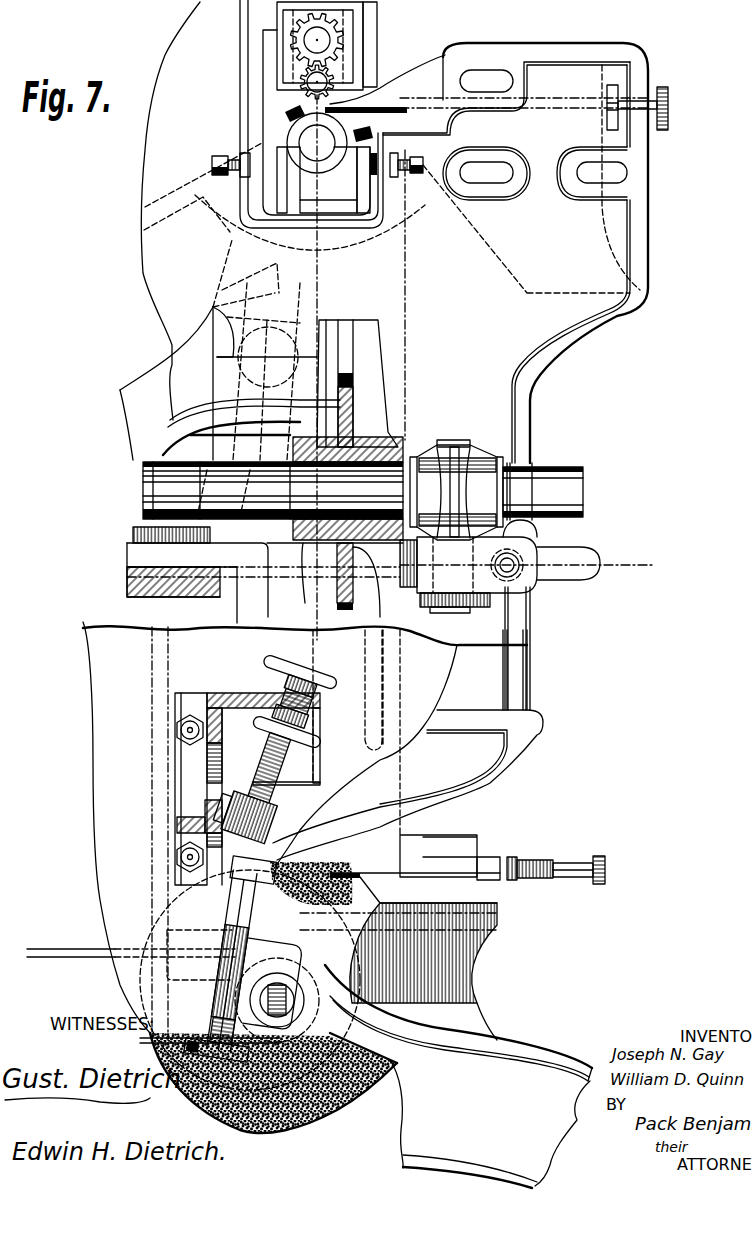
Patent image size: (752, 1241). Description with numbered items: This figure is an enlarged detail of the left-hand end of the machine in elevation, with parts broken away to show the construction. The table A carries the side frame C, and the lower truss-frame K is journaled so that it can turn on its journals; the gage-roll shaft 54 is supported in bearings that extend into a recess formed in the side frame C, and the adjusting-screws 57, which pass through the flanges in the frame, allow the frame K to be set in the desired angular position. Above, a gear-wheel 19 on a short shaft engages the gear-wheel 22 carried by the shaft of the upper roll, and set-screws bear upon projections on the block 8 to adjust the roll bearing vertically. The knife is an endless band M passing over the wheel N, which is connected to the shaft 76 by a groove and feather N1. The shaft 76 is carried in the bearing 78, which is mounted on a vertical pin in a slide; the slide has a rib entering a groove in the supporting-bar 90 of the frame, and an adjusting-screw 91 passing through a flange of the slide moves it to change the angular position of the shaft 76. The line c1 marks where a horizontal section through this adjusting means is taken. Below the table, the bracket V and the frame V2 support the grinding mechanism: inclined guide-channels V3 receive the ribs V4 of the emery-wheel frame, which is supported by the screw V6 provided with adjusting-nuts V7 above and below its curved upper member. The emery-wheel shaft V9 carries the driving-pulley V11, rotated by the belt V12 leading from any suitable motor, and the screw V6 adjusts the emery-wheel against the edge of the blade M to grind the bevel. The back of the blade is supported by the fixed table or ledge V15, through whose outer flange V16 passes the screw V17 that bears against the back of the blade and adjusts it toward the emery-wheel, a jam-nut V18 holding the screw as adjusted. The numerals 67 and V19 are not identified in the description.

The block 8 is at (372, 33).
The gear-wheel 19 is at (293, 33).
The gear-wheel 22 is at (293, 76).
The shaft 54 is at (342, 114).
The adjusting-screws 57 is at (216, 156).
The clamping screw 67 is at (650, 107).
The shaft 76 is at (583, 473).
The bearing 78 is at (456, 490).
The supporting-bar 90 is at (534, 566).
The adjusting-screw 91 is at (508, 577).
The lower truss-frame K is at (272, 231).
The side frame C is at (419, 451).
The wheel N is at (357, 383).
The groove and feather N1 is at (273, 488).
The section line c1 is at (265, 540).
The table A is at (582, 577).
The bracket V is at (305, 831).
The frame V2 is at (247, 776).
The inclined guide-channels V3 is at (292, 815).
The ribs V4 is at (210, 1000).
The screw V6 is at (290, 1003).
The adjusting-nuts V7 is at (287, 667).
The shaft V9 is at (455, 1010).
The driving-pulley V11 is at (273, 997).
The belt V12 is at (131, 961).
The fixed table or ledge V15 is at (500, 897).
The outer flange V16 is at (280, 757).
The screw V17 is at (553, 864).
The jam-nut V18 is at (513, 860).
The nut V19 is at (250, 796).
The band-knife M is at (400, 937).